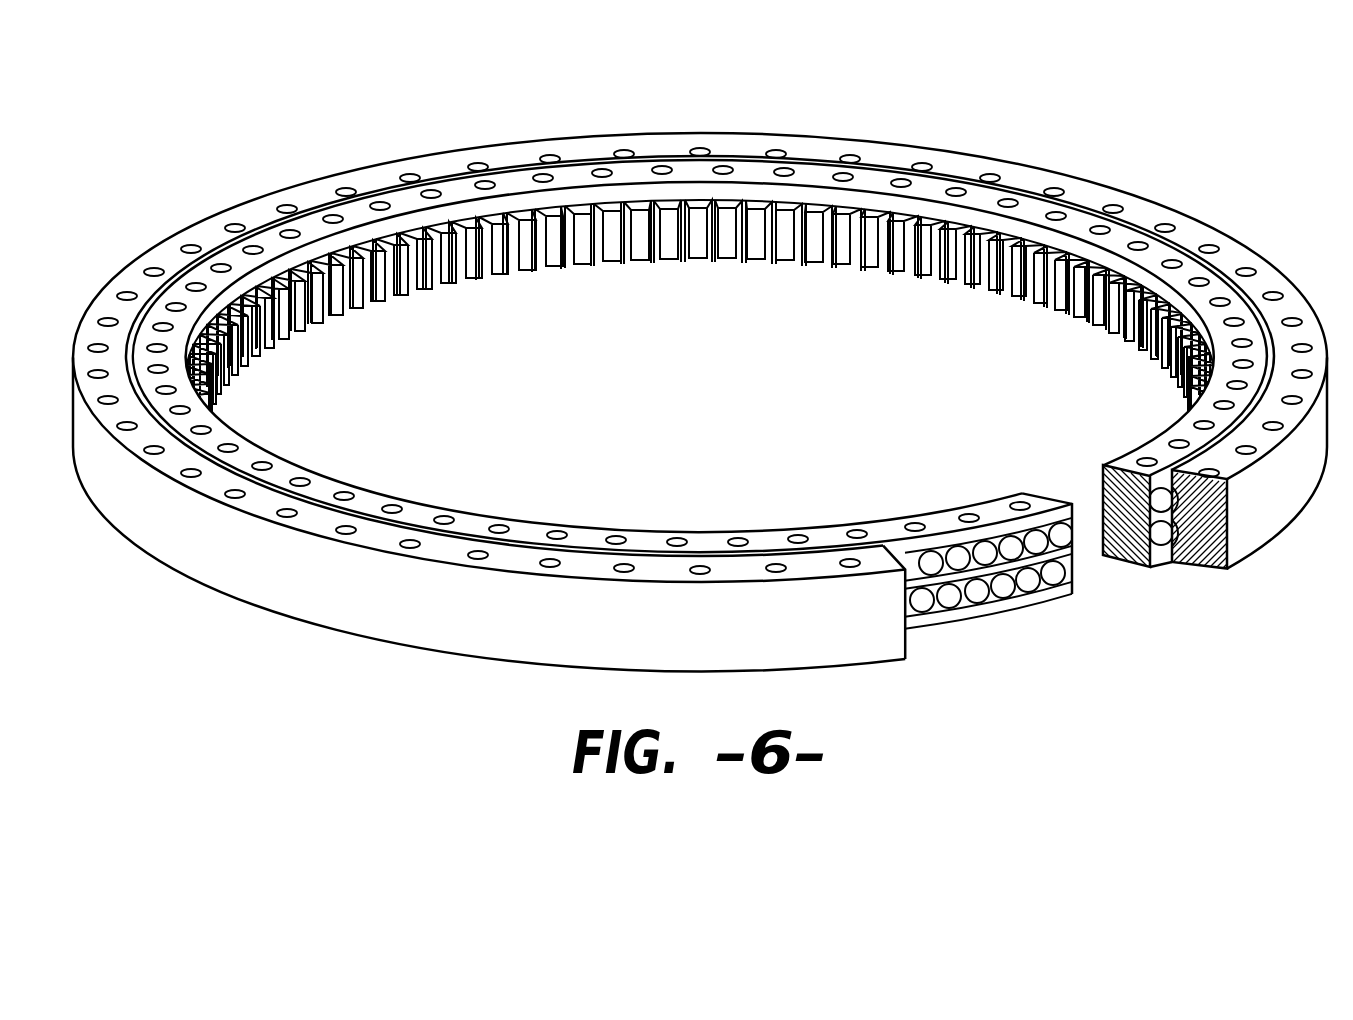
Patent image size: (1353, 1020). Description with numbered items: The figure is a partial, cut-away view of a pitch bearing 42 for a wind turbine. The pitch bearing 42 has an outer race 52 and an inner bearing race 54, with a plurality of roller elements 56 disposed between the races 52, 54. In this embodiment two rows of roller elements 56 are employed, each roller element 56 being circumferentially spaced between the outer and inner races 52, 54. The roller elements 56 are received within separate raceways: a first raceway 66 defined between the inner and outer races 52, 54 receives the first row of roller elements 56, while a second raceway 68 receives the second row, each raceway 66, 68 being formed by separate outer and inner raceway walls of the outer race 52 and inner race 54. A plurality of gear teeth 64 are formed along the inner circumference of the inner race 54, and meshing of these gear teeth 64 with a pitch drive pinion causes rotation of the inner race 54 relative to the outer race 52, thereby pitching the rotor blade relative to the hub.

The pitch bearing 42 is at (994, 150).
The outer race 52 is at (168, 258).
The inner bearing race 54 is at (240, 452).
The roller elements 56 is at (1032, 582).
The gear teeth 64 is at (452, 253).
The first raceway 66 is at (1233, 497).
The second raceway 68 is at (1203, 533).